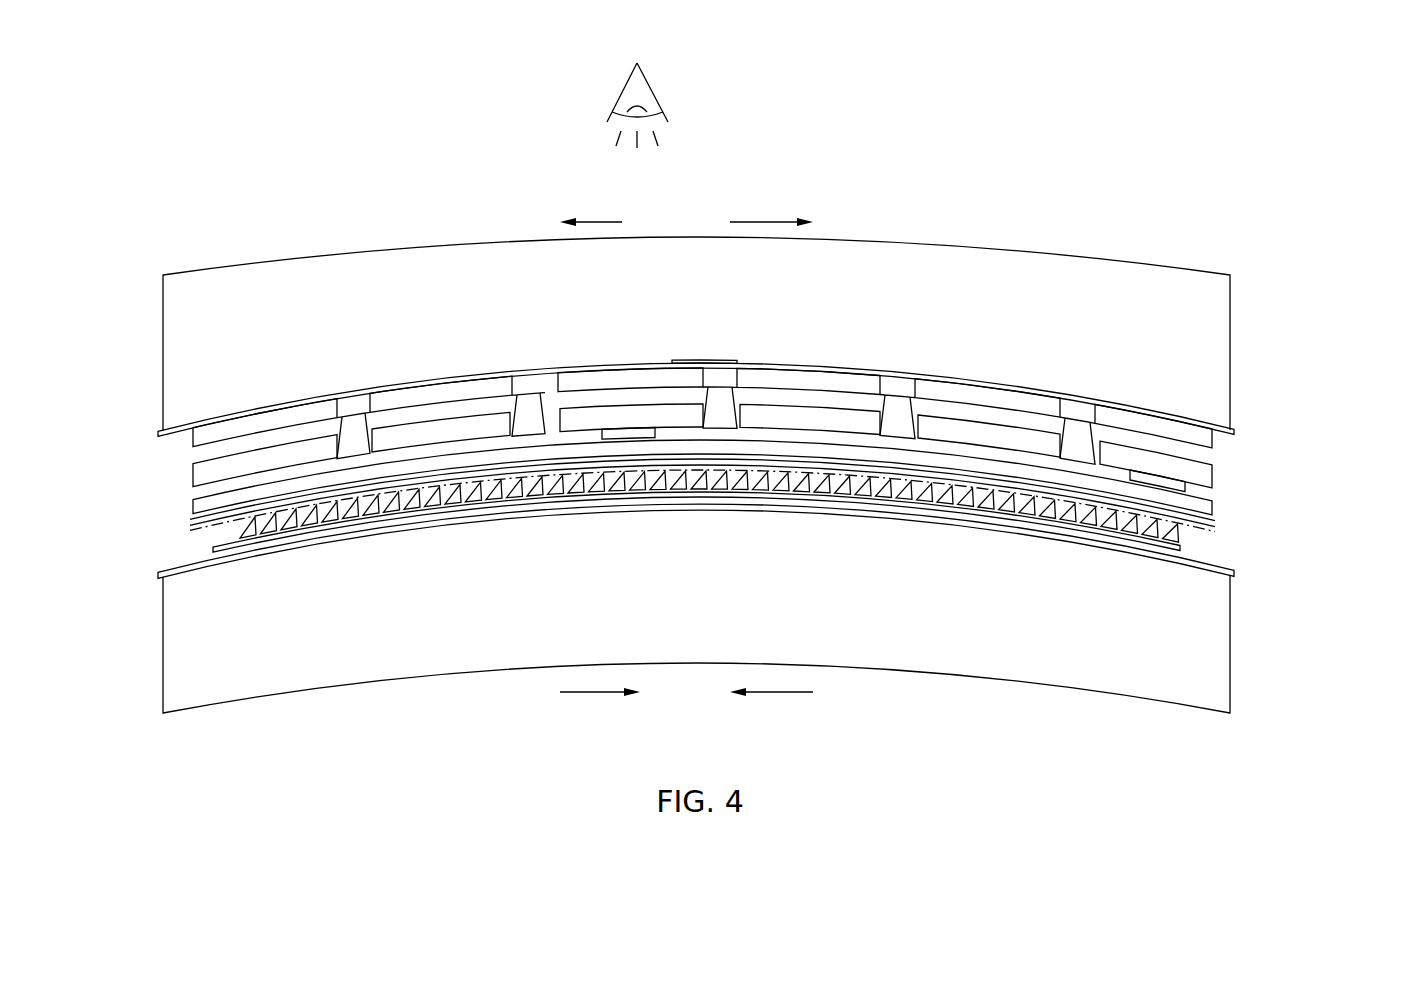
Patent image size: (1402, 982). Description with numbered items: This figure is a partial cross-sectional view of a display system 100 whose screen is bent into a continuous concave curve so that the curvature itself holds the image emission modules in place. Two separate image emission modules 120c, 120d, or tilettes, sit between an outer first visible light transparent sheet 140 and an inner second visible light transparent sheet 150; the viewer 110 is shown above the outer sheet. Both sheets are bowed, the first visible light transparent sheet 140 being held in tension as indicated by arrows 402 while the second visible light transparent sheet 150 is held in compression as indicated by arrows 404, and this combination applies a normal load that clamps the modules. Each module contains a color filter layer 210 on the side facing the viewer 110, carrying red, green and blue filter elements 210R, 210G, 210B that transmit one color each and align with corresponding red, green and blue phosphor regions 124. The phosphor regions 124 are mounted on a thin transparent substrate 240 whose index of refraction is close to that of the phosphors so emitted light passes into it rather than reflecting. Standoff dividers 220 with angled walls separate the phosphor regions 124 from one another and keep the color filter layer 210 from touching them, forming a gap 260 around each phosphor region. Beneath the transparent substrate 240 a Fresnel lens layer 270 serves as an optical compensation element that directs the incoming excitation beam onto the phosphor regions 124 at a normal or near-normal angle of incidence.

The display system 100 is at (218, 150).
The viewer 110 is at (650, 92).
The image emission module 120c is at (176, 489).
The image emission module 120d is at (1237, 480).
The phosphor regions 124 is at (288, 460).
The first visible light transparent sheet 140 is at (666, 276).
The second visible light transparent sheet 150 is at (666, 628).
The color filter layer 210 is at (1213, 440).
The red filter element 210R is at (278, 413).
The green filter element 210G is at (395, 398).
The blue filter element 210B is at (592, 378).
The standoff dividers 220 is at (353, 408).
The transparent substrate 240 is at (1212, 518).
The gap 260 is at (704, 365).
The Fresnel lens layer 270 is at (1195, 540).
The arrows 402 is at (750, 218).
The arrows 404 is at (598, 692).